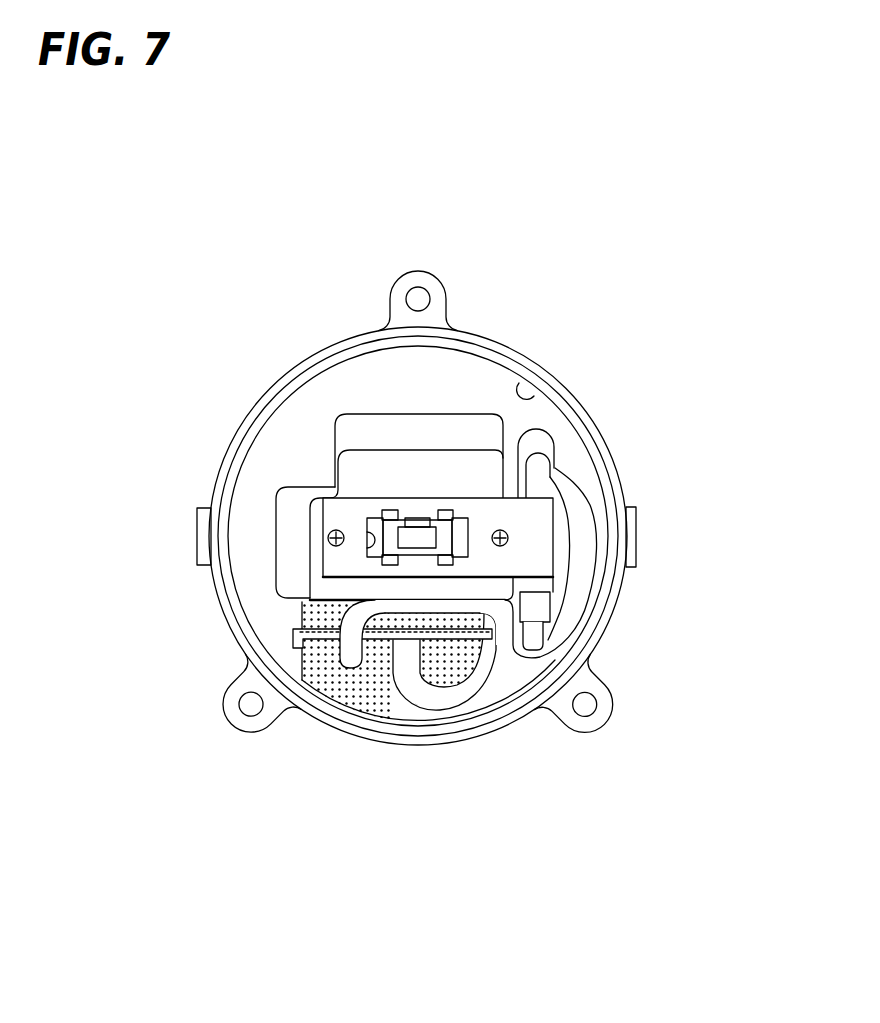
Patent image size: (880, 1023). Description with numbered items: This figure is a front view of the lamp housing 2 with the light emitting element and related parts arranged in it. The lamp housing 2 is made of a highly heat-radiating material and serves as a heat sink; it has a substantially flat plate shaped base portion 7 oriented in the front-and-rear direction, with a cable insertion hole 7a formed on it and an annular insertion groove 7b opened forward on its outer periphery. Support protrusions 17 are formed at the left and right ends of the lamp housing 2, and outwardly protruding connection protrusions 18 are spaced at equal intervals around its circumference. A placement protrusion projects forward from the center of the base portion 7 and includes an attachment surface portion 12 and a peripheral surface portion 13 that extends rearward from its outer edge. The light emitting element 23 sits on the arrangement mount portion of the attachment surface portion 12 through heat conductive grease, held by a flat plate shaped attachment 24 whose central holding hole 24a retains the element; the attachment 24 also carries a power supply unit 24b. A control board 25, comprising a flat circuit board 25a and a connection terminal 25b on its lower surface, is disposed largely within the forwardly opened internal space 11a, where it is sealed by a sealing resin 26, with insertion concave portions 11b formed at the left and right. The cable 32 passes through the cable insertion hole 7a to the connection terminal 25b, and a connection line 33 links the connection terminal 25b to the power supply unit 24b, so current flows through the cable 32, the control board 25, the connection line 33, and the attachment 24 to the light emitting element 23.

The lamp housing 2 is at (520, 348).
The base portion 7 is at (347, 380).
The cable insertion hole 7a is at (555, 447).
The annular insertion groove 7b is at (552, 378).
The internal space 11a is at (372, 690).
The insertion concave portions 11b is at (300, 690).
The attachment surface portion 12 is at (367, 457).
The peripheral surface portion 13 is at (290, 497).
The support protrusions 17 is at (200, 522).
The connection protrusions 18 is at (422, 273).
The light emitting element 23 is at (419, 532).
The attachment 24 is at (333, 510).
The holding hole 24a is at (340, 555).
The power supply unit 24b is at (548, 604).
The control board 25 is at (300, 712).
The circuit board 25a is at (460, 670).
The connection terminal 25b is at (395, 690).
The sealing resin 26 is at (306, 682).
The cable 32 is at (493, 690).
The connection line 33 is at (325, 640).